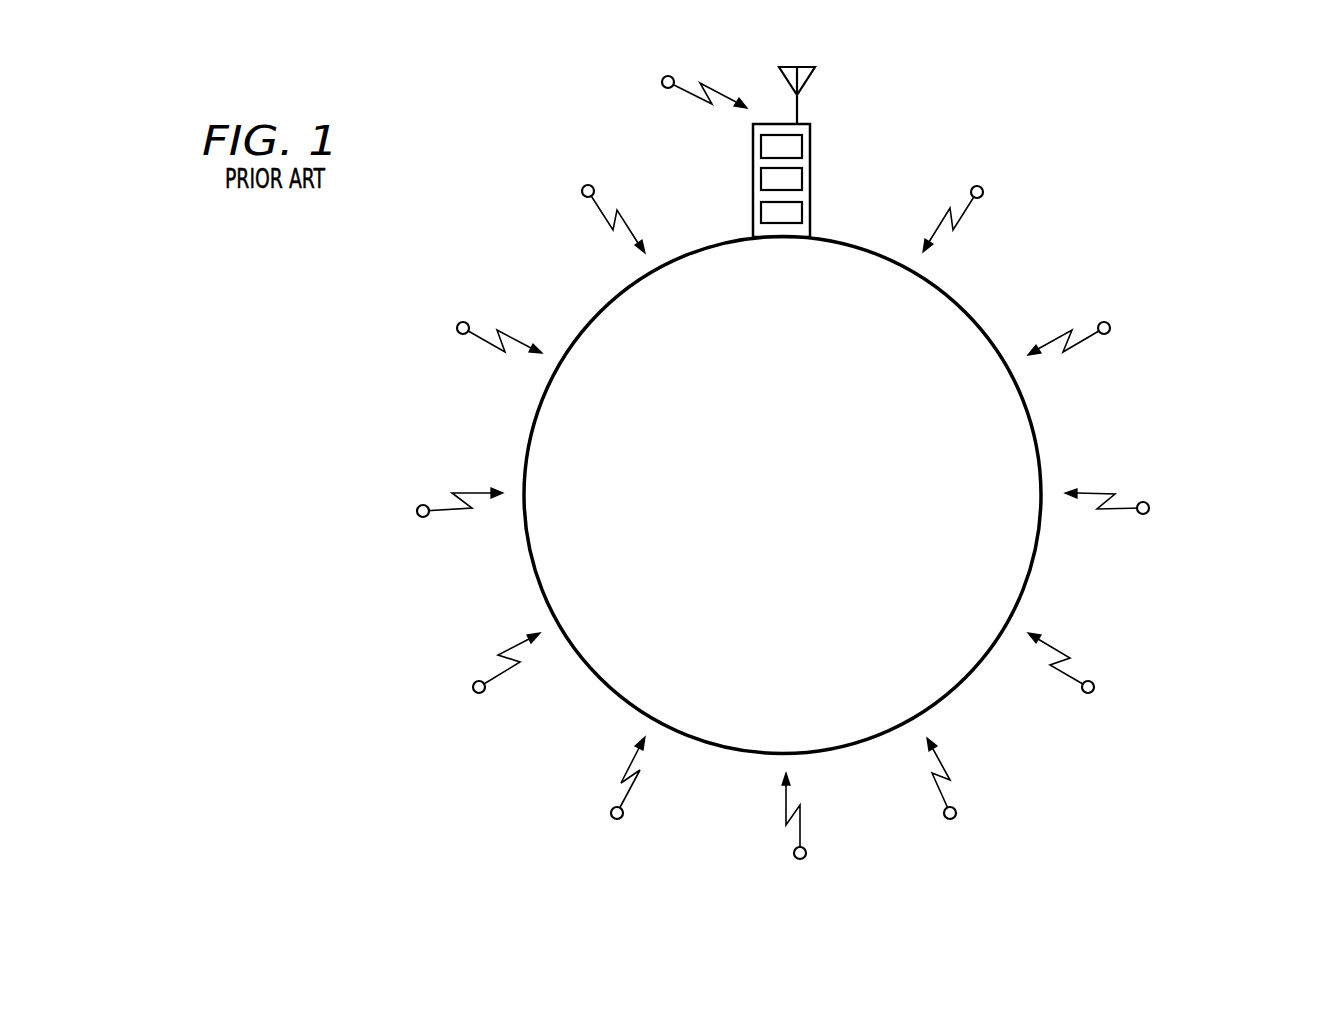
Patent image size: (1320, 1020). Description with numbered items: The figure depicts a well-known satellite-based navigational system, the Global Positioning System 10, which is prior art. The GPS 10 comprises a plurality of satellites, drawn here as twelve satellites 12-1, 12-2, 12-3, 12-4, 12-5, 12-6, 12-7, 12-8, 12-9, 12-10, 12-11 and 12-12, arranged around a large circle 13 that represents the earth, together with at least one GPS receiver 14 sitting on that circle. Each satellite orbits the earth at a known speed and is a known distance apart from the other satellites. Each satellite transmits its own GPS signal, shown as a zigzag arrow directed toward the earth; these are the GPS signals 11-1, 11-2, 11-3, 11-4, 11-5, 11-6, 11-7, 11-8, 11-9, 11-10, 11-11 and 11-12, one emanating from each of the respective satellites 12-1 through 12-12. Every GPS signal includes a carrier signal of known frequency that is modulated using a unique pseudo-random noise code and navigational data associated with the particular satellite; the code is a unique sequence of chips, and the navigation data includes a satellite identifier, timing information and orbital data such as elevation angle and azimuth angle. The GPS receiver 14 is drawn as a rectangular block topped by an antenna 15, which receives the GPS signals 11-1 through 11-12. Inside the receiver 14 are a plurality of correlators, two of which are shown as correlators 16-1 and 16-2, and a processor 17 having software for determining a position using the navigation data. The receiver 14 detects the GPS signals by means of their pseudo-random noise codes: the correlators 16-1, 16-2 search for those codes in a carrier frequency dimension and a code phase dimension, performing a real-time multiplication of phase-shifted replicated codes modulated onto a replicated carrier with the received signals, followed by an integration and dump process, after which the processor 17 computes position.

The Global Positioning System 10 is at (290, 221).
The cell (service area) 13 is at (1043, 470).
The GPS receiver 14 is at (753, 172).
The antenna 15 is at (812, 85).
The processor 17 is at (800, 142).
The correlator 16-1 is at (800, 178).
The correlator 16-2 is at (800, 218).
The GPS signal 11-1 is at (694, 96).
The GPS signal 11-2 is at (963, 215).
The GPS signal 11-3 is at (1083, 341).
The GPS signal 11-4 is at (1118, 512).
The GPS signal 11-5 is at (1069, 676).
The GPS signal 11-6 is at (941, 793).
The GPS signal 11-7 is at (800, 825).
The GPS signal 11-8 is at (629, 790).
The GPS signal 11-9 is at (500, 675).
The GPS signal 11-10 is at (450, 510).
The GPS signal 11-11 is at (484, 340).
The GPS signal 11-12 is at (600, 212).
The satellite 12-1 is at (662, 83).
The satellite 12-2 is at (984, 189).
The satellite 12-3 is at (1109, 324).
The satellite 12-4 is at (1150, 505).
The satellite 12-5 is at (1094, 684).
The satellite 12-6 is at (957, 809).
The satellite 12-7 is at (794, 853).
The satellite 12-8 is at (611, 813).
The satellite 12-9 is at (473, 687).
The satellite 12-10 is at (417, 511).
The satellite 12-11 is at (457, 328).
The satellite 12-12 is at (582, 191).